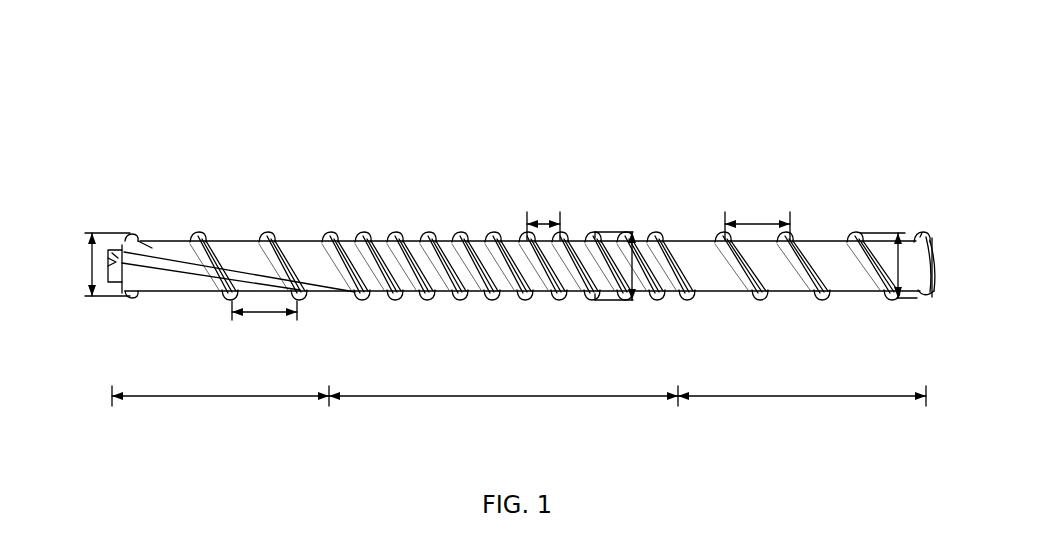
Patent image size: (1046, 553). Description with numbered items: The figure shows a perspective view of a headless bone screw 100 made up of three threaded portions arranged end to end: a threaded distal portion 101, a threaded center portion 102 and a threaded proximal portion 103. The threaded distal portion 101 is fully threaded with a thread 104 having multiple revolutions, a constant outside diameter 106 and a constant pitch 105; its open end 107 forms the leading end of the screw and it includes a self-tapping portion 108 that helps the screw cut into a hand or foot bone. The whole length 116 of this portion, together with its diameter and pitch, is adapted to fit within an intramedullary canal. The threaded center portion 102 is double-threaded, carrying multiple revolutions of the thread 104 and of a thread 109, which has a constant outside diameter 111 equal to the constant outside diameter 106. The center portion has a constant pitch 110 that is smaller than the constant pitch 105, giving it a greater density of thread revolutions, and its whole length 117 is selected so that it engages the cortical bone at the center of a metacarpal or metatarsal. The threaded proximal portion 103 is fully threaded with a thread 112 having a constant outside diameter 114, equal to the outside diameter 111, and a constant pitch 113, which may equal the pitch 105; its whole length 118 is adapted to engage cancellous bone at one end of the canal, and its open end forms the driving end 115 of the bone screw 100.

The bone screw 100 is at (335, 63).
The threaded distal portion 101 is at (252, 203).
The threaded center portion 102 is at (482, 192).
The threaded proximal portion 103 is at (812, 180).
The thread 104 is at (196, 240).
The constant pitch 105 is at (268, 320).
The constant outside diameter 106 is at (90, 266).
The open end 107 is at (116, 284).
The self-tapping portion 108 is at (157, 253).
The thread 109 is at (428, 236).
The constant pitch 110 is at (542, 220).
The constant outside diameter 111 is at (647, 262).
The thread 112 is at (853, 235).
The constant pitch 113 is at (758, 221).
The constant outside diameter 114 is at (919, 235).
The driving end 115 is at (932, 262).
The whole length 116 is at (223, 398).
The whole length 117 is at (489, 398).
The whole length 118 is at (812, 398).